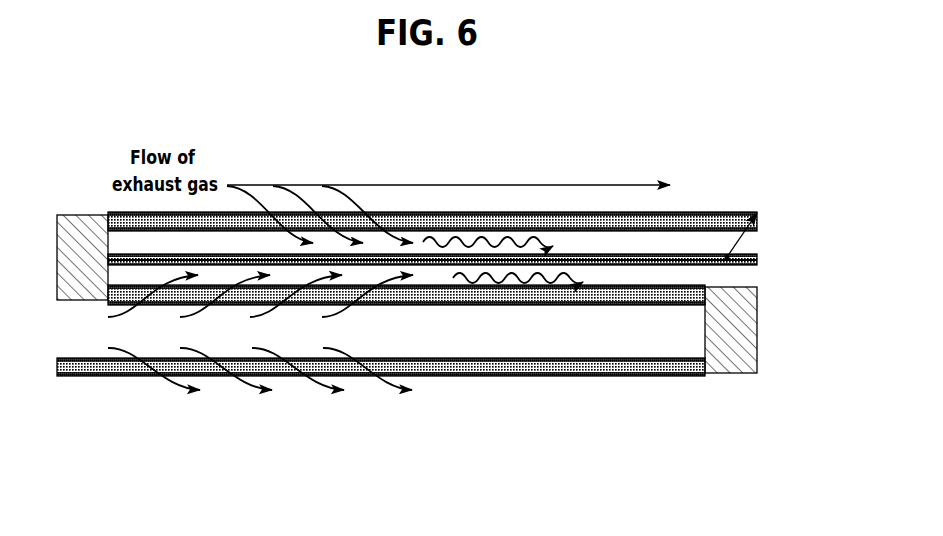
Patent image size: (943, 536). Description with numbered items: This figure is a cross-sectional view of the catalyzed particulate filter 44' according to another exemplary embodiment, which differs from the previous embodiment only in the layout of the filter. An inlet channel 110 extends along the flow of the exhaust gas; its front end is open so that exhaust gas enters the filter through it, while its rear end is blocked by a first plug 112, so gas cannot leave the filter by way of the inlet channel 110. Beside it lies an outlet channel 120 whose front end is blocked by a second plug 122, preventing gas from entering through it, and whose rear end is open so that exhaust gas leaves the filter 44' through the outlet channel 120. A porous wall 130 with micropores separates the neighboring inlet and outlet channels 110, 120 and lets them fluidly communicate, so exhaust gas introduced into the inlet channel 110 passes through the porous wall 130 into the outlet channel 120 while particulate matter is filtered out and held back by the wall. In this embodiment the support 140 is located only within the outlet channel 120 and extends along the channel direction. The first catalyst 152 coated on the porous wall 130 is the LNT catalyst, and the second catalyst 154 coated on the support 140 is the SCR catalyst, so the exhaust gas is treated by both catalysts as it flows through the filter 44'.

The inlet channel 110 is at (80, 333).
The first plug 112 is at (733, 360).
The outlet channel 120 is at (748, 244).
The second plug 122 is at (77, 226).
The porous wall 130 is at (106, 366).
The support 140 is at (752, 265).
The first catalyst 152 is at (693, 228).
The second catalyst 154 is at (670, 256).
The catalyzed particulate filter 44' is at (406, 390).